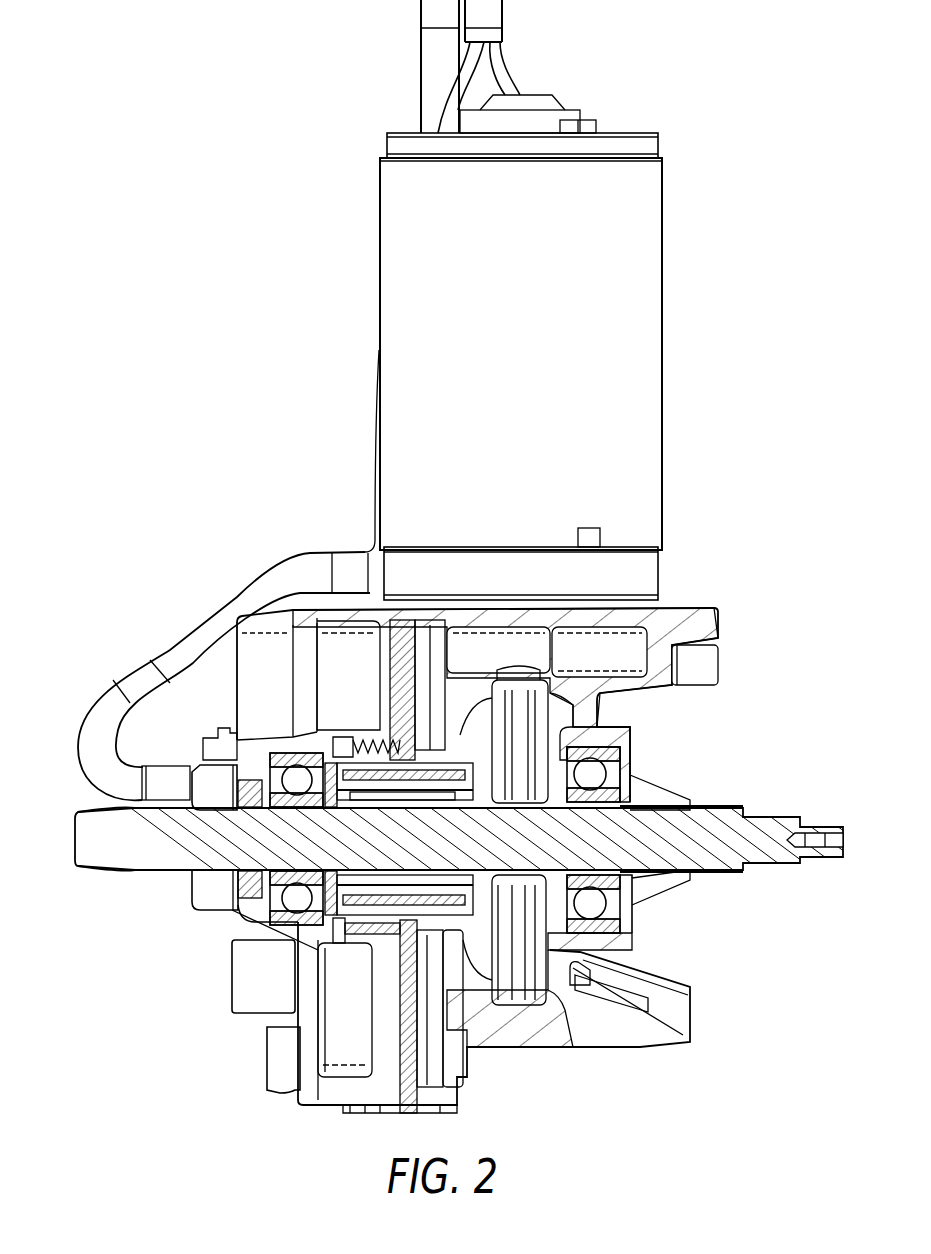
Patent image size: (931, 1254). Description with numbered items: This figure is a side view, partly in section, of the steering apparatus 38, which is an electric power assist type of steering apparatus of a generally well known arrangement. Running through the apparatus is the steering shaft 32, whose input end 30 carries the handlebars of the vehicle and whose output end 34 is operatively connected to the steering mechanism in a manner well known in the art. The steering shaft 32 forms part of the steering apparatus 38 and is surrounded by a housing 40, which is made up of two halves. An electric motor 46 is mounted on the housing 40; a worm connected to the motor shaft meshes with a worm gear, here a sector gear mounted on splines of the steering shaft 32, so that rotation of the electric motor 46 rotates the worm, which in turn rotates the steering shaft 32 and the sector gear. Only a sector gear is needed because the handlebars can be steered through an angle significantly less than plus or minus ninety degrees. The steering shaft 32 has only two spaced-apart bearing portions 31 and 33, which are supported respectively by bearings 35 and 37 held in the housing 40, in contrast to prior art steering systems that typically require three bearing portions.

The input end 30 is at (92, 875).
The bearing portion 31 is at (500, 888).
The steering shaft 32 is at (182, 845).
The bearing portion 33 is at (605, 843).
The output end 34 is at (825, 863).
The bearing 35 is at (287, 758).
The bearing 37 is at (632, 740).
The steering apparatus 38 is at (416, 814).
The housing 40 is at (722, 633).
The electric motor 46 is at (612, 385).